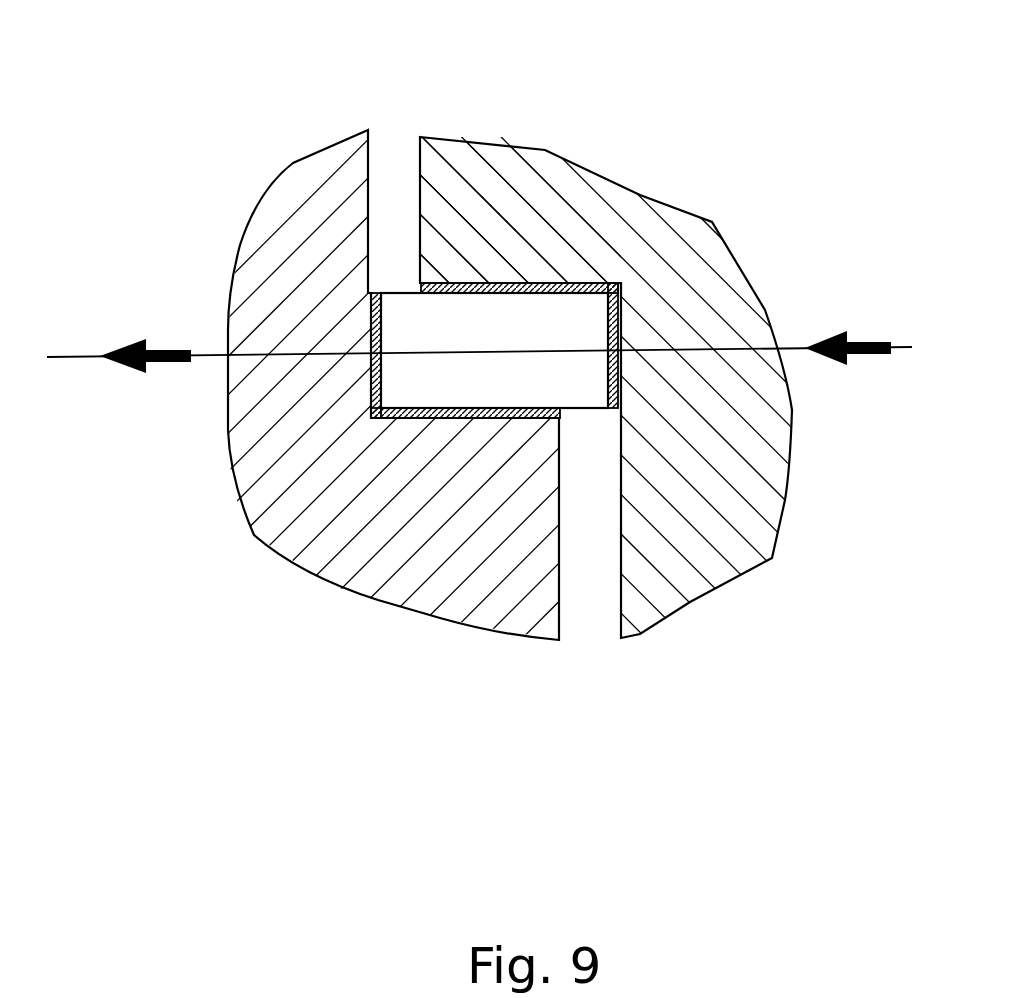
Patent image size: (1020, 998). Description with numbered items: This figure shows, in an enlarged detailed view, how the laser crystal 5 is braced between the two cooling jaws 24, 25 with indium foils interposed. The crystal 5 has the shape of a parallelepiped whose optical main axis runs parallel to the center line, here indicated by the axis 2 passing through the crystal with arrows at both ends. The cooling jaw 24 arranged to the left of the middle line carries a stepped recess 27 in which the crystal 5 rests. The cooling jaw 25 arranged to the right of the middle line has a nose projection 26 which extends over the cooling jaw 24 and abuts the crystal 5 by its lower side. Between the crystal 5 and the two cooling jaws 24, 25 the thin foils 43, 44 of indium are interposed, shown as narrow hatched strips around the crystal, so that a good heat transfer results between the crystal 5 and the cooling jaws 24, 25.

The axis / direction arrows 2 is at (479, 337).
The crystal 5 is at (425, 380).
The cooling jaw 24 is at (295, 233).
The cooling jaw 25 is at (470, 165).
The nose projection 26 is at (505, 241).
The stepped recess 27 is at (482, 425).
The foil 43 is at (556, 288).
The foil 44 is at (458, 420).